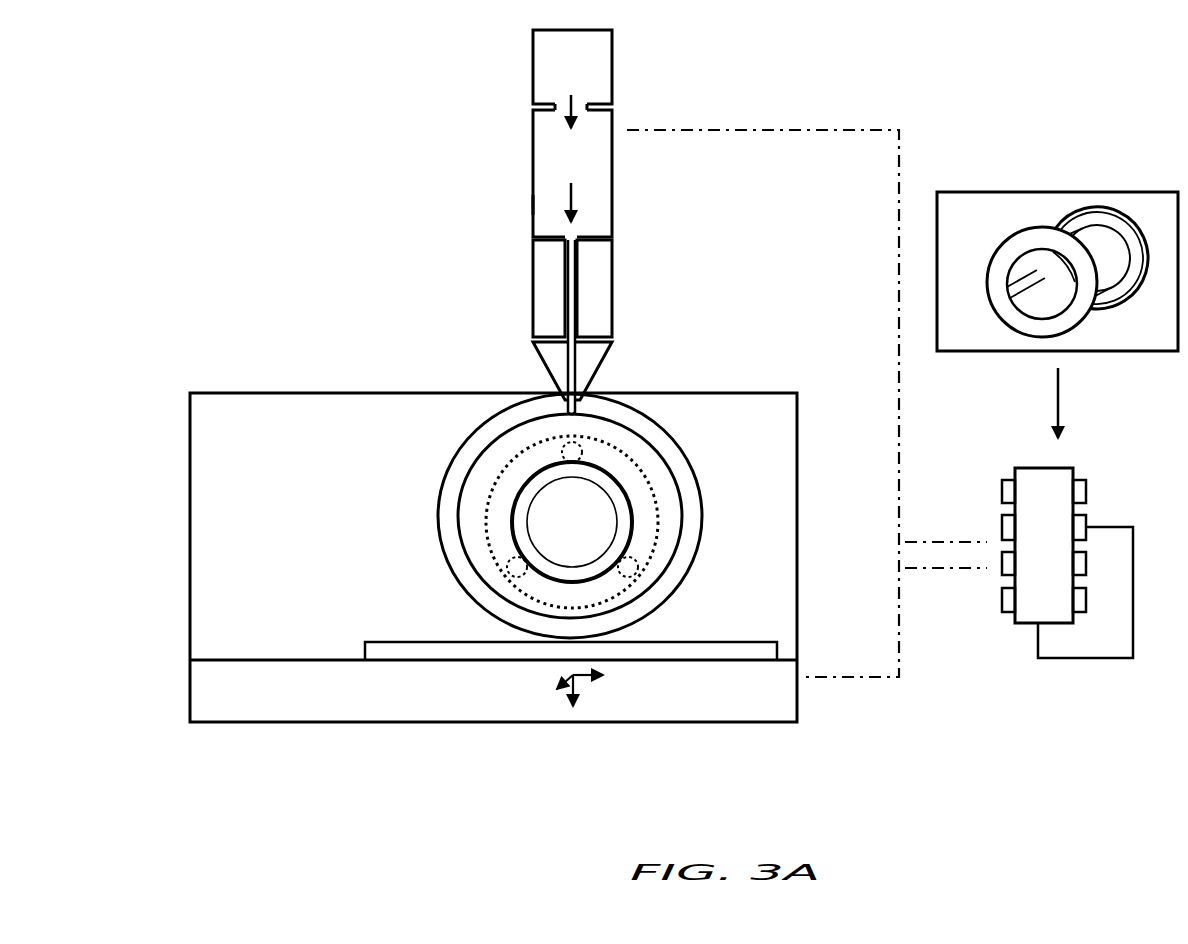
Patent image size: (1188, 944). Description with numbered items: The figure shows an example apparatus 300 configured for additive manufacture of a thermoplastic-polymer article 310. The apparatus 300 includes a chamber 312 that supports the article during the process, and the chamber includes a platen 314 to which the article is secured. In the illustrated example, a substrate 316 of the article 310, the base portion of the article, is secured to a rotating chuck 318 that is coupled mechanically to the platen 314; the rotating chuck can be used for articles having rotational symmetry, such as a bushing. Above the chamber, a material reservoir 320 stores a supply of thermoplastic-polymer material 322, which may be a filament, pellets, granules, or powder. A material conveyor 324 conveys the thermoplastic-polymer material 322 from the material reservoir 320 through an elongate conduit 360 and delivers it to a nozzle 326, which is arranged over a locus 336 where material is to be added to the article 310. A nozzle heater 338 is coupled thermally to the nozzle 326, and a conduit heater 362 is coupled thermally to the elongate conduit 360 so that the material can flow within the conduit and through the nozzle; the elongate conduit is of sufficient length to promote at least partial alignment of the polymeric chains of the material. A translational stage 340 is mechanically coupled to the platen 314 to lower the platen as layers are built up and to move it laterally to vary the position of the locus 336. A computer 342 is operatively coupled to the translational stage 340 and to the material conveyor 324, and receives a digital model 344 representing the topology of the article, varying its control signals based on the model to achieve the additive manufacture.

The apparatus 300 is at (236, 214).
The thermoplastic-polymer article 310 is at (683, 507).
The chamber 312 is at (797, 503).
The platen 314 is at (365, 648).
The substrate 316 is at (512, 547).
The rotating chuck 318 is at (447, 471).
The material reservoir 320 is at (612, 72).
The thermoplastic-polymer material 322 is at (589, 174).
The material conveyor 324 is at (533, 205).
The nozzle 326 is at (522, 375).
The locus 336 is at (591, 428).
The nozzle heater 338 is at (603, 360).
The translational stage 340 is at (771, 709).
The computer 342 is at (1120, 649).
The digital model 344 is at (989, 332).
The elongate conduit 360 is at (577, 266).
The conduit heater 362 is at (612, 300).